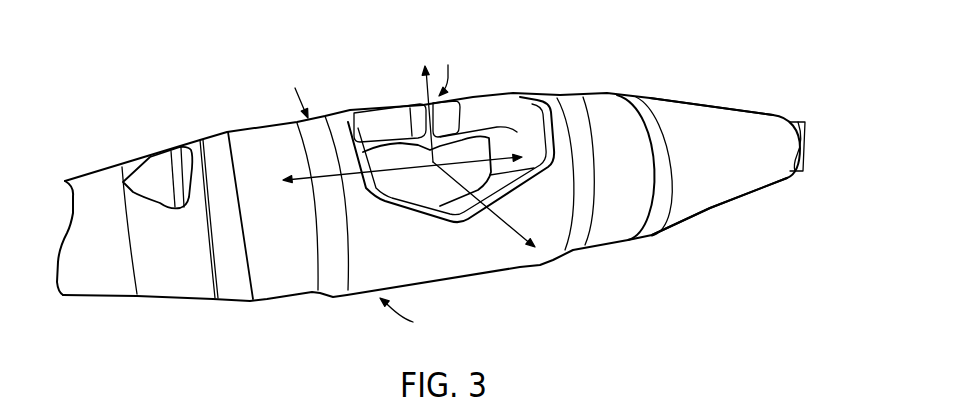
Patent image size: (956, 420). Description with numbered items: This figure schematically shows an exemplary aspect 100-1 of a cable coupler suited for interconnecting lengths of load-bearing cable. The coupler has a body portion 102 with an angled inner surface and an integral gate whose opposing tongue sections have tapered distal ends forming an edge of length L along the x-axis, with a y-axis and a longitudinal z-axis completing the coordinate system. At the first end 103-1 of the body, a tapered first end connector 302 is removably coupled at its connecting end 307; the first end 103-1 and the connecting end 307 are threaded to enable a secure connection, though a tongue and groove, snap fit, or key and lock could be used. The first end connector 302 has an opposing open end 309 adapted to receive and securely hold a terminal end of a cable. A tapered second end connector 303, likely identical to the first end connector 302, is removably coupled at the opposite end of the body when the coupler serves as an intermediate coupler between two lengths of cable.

The coupler 100-1 is at (235, 83).
The body portion 102 is at (583, 107).
The first end 103-1 is at (648, 227).
The first end connector 302 is at (733, 200).
The second end connector 303 is at (148, 298).
The connecting end 307 is at (695, 117).
The open end 309 is at (800, 121).